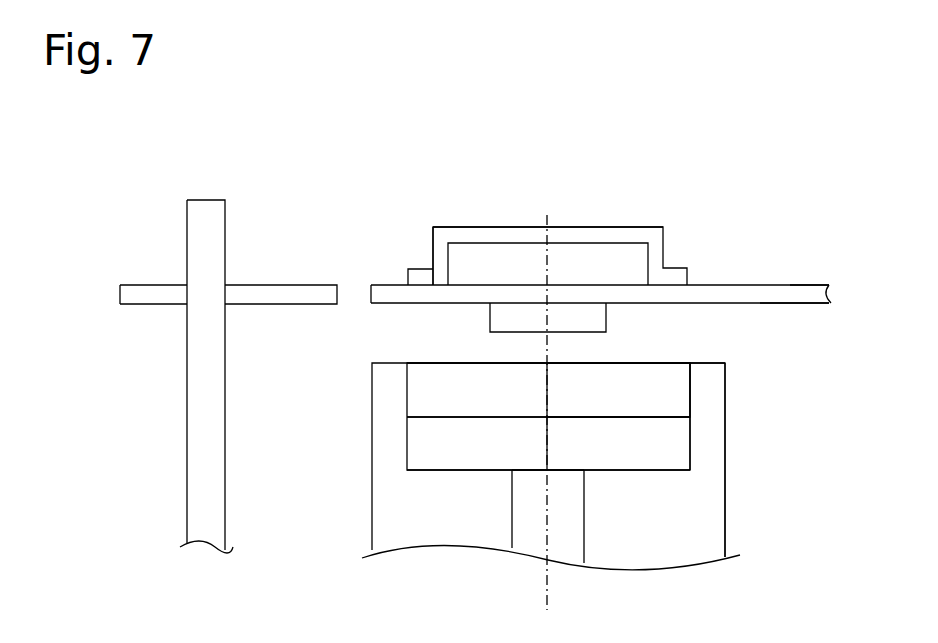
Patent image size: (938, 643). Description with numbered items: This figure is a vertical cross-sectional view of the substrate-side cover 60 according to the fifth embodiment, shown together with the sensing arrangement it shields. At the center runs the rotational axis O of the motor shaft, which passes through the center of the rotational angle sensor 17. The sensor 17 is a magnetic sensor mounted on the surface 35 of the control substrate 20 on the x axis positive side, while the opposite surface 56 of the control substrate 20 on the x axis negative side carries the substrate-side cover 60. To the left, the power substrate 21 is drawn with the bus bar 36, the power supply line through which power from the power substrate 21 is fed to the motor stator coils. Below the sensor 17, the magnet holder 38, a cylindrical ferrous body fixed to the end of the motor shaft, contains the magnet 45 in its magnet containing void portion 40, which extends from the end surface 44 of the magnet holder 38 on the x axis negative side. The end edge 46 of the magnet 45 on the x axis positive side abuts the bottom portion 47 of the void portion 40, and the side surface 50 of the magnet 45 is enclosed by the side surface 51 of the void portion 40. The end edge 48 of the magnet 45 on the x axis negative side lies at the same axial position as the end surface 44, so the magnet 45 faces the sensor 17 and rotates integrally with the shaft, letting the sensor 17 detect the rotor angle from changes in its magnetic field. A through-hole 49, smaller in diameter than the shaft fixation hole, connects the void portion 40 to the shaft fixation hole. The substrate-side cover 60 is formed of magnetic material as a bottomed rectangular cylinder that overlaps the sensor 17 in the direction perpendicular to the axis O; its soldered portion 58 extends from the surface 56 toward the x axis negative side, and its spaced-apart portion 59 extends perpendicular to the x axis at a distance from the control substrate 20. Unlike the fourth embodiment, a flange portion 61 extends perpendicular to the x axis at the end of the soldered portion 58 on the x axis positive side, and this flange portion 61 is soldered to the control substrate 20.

The rotational angle sensor 17 is at (614, 316).
The control substrate 20 is at (728, 283).
The power substrate 21 is at (277, 278).
The surface of the control substrate on the x axis positive side 35 is at (790, 305).
The bus bar 36 is at (187, 425).
The magnet holder 38 is at (731, 458).
The magnet containing void portion 40 is at (660, 356).
The end surface of the magnet holder on the x axis negative side 44 is at (713, 363).
The magnet 45 is at (581, 380).
The end edge of the magnet on the x axis positive side 46 is at (647, 471).
The bottom portion of the magnet containing void portion 47 is at (668, 470).
The end edge of the magnet on the x axis negative side 48 is at (625, 363).
The through-hole 49 is at (583, 543).
The side surface of the magnet 50 is at (690, 398).
The side surface of the magnet containing void portion 51 is at (708, 388).
The surface of the control substrate on the x axis negative side 56 is at (810, 283).
The soldered portion 58 is at (432, 243).
The spaced-apart portion 59 is at (490, 227).
The substrate-side cover 60 is at (432, 222).
The flange portion 61 is at (420, 268).
The rotational axis O is at (548, 215).